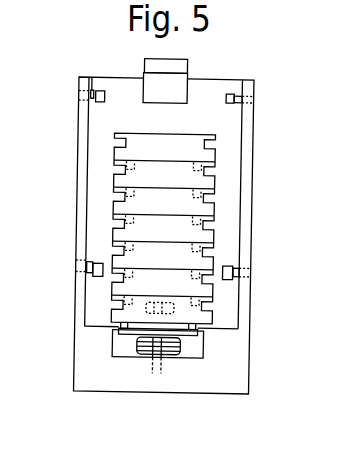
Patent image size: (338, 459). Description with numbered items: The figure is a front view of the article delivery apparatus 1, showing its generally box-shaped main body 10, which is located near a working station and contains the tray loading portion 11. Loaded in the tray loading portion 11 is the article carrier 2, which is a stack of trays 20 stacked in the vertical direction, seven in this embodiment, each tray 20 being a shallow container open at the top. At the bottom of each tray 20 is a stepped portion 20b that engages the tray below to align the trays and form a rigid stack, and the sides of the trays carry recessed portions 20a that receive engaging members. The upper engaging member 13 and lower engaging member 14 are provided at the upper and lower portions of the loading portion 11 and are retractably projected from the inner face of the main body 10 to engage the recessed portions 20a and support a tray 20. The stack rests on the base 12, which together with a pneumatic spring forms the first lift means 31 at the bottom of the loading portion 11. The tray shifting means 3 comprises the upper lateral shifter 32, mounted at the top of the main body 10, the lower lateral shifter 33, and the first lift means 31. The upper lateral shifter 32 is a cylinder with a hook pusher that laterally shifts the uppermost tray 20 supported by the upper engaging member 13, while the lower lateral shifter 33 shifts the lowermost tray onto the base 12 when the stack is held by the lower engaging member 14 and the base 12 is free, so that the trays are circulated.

The article delivery apparatus 1 is at (169, 210).
The article carrier 2 is at (217, 219).
The tray shifting means 3 is at (169, 72).
The main body 10 is at (252, 190).
The tray loading portion 11 is at (91, 149).
The base 12 is at (122, 333).
The upper engaging member 13 is at (100, 88).
The lower engaging member 14 is at (90, 263).
The tray 20 is at (188, 142).
The recessed portion 20a is at (212, 168).
The stepped portion 20b is at (208, 336).
The first lift means 31 is at (186, 347).
The upper lateral shifter 32 is at (146, 62).
The lower lateral shifter 33 is at (178, 309).